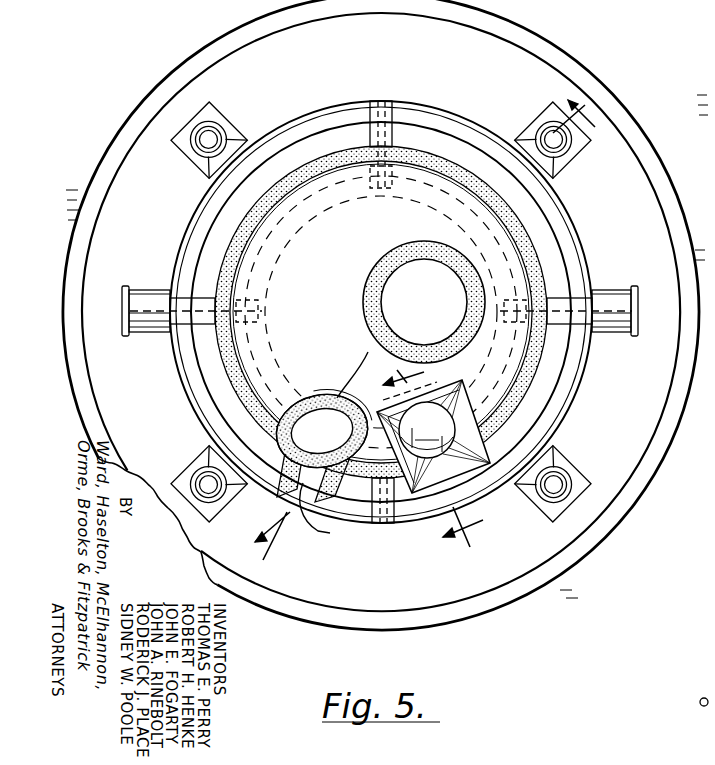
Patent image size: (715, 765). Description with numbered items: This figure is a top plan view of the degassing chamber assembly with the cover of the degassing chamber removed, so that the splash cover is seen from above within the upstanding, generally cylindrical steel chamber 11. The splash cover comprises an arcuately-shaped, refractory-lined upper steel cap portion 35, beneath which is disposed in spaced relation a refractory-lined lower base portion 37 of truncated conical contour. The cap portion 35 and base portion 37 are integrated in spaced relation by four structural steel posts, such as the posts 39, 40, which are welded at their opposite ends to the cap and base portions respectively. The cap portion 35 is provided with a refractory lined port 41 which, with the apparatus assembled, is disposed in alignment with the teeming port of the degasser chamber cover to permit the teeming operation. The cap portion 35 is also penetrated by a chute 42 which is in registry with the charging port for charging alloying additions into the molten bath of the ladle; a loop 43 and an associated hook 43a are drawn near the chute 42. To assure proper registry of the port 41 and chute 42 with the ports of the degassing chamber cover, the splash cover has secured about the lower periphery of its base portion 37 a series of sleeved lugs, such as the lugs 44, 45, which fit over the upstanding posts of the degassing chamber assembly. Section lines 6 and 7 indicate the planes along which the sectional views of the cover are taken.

The steel chamber 11 is at (522, 32).
The upper cap portion 35 is at (326, 176).
The lower base portion 37 is at (328, 112).
The structural steel post 39 is at (202, 303).
The structural steel post 40 is at (393, 136).
The refractory lined port 41 is at (366, 301).
The chute 42 is at (383, 418).
The loop 43 is at (321, 422).
The hook 43a is at (330, 515).
The sleeved lug 44 is at (550, 133).
The sleeved lug 45 is at (203, 473).
The section line 6- 6 is at (434, 335).
The section line 7- 7 is at (440, 455).